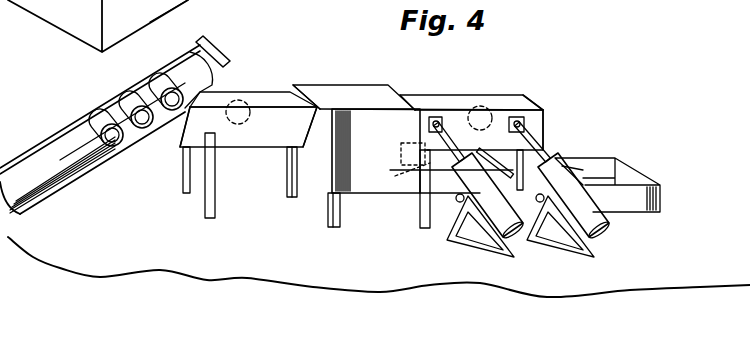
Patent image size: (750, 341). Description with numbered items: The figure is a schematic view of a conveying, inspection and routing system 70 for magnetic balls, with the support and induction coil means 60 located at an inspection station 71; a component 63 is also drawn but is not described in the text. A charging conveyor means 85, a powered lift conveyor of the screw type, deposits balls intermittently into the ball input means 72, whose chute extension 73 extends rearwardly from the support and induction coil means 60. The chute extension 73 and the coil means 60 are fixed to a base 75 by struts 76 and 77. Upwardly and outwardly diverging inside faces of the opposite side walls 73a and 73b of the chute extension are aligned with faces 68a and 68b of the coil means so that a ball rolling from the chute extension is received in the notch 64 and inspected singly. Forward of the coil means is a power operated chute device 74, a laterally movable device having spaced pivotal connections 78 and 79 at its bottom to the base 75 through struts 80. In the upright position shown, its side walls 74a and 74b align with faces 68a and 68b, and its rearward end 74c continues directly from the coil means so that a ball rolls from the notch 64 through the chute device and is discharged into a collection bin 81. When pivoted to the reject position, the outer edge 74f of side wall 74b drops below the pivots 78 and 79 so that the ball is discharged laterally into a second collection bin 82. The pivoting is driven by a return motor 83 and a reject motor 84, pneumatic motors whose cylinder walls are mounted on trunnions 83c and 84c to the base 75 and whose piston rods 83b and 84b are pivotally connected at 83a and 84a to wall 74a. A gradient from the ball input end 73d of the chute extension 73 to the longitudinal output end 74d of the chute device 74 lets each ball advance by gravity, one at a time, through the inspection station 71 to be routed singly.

The support and induction coil means 60 is at (55, 32).
The housing 63 is at (198, 11).
The notch 64 is at (335, 102).
The face 68a is at (306, 141).
The face 68b is at (308, 96).
The conveying, inspection and routing system 70 is at (192, 202).
The inspection station 71 is at (363, 80).
The ball input means 72 is at (229, 89).
The chute extension 73 is at (263, 90).
The side wall 73a is at (180, 113).
The side wall 73b is at (279, 100).
The ball input end 73d is at (182, 172).
The power operated chute device 74 is at (502, 92).
The side wall 74a is at (433, 109).
The side wall 74b is at (410, 97).
The rearward end 74c is at (408, 146).
The longitudinal output end 74d is at (545, 118).
The outer edge 74f is at (518, 95).
The base 75 is at (252, 269).
The strut 76 is at (186, 172).
The strut 77 is at (338, 210).
The pivotal connection 78 is at (406, 173).
The pivotal connection 79 is at (532, 152).
The struts 80 is at (491, 142).
The collection bin 81 is at (647, 173).
The collection bin 82 is at (424, 221).
The return motor 83 is at (477, 196).
The pivotal connection 83a is at (428, 125).
The piston rod 83b is at (450, 132).
The trunnion 83c is at (458, 205).
The reject motor 84 is at (598, 219).
The pivotal connection 84a is at (527, 117).
The piston rod 84b is at (542, 153).
The trunnion 84c is at (542, 205).
The charging conveyor means 85 is at (45, 143).